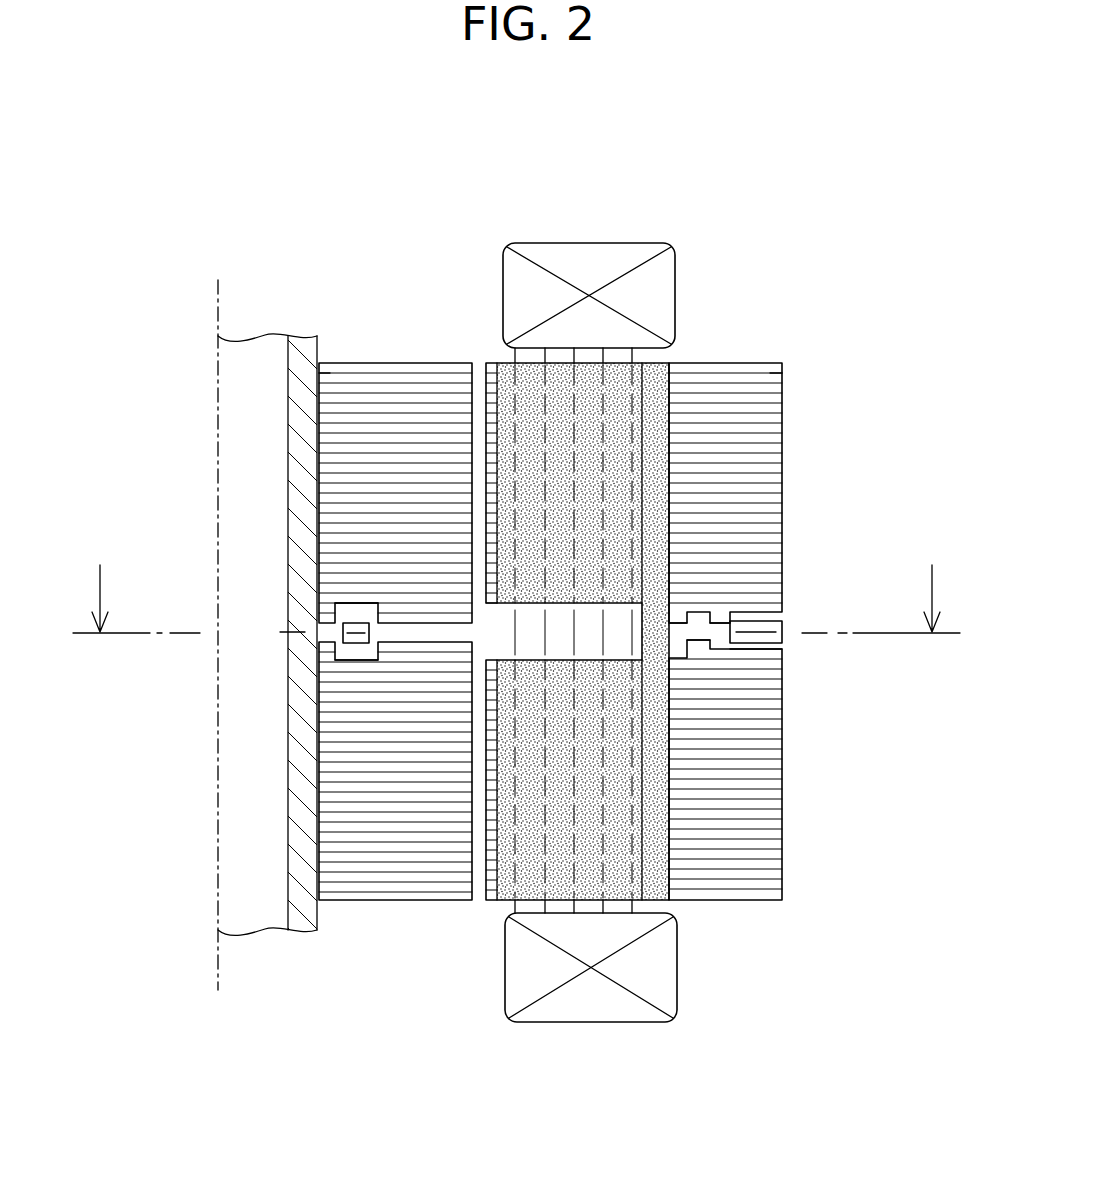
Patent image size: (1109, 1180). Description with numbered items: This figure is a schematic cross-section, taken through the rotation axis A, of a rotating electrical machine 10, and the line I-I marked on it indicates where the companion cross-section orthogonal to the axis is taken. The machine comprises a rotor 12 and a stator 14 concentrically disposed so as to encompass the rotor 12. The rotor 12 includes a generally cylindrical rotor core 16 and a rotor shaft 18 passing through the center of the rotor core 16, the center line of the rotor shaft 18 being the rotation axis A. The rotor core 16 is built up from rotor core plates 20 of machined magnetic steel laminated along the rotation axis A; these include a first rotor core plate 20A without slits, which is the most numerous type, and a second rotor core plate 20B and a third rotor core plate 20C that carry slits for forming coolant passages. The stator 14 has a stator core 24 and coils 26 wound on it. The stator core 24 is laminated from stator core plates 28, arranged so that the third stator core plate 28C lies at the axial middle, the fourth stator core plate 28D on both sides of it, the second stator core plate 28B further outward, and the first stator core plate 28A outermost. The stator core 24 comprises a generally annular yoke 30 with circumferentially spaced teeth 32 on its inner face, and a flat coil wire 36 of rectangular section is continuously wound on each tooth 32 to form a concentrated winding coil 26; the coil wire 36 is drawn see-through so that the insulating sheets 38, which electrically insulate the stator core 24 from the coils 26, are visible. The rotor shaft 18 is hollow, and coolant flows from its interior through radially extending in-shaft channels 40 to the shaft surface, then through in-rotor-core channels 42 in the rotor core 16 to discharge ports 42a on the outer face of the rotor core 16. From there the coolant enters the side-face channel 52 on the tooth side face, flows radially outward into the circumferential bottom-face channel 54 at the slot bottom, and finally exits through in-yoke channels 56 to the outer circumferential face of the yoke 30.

The rotating electrical machine 10 is at (888, 177).
The rotor 12 is at (352, 207).
The stator 14 is at (763, 177).
The rotor core 16 is at (400, 385).
The rotor shaft 18 is at (298, 333).
The rotor core plates 20 is at (222, 552).
The first rotor core plate 20A is at (322, 384).
The second rotor core plate 20B is at (327, 653).
The third rotor core plate 20C is at (323, 657).
The stator core 24 is at (755, 377).
The coils 26 is at (562, 250).
The stator core plates 28 is at (836, 538).
The first stator core plate 28A is at (782, 375).
The second stator core plate 28B is at (748, 652).
The third stator core plate 28C is at (773, 633).
The fourth stator core plate 28D is at (697, 647).
The yoke 30 is at (717, 362).
The teeth 32 is at (488, 362).
The coil wire 36 is at (672, 278).
The insulating sheets 38 is at (643, 863).
The in-shaft channels 40 is at (302, 633).
The in-rotor-core channels 42 is at (355, 640).
The discharge ports 42a is at (470, 640).
The side-face channel 52 is at (583, 625).
The bottom-face channel 54 is at (682, 617).
The in-yoke channels 56 is at (723, 623).
The rotation axis A is at (218, 302).
The line I- I is at (516, 583).